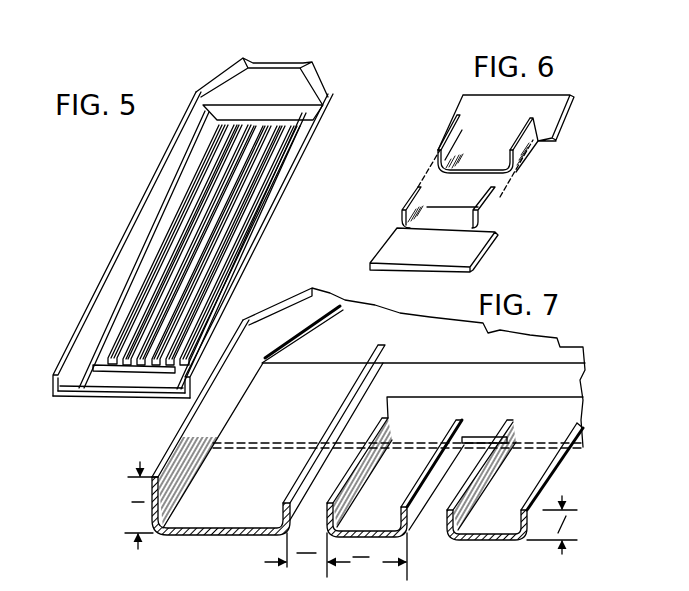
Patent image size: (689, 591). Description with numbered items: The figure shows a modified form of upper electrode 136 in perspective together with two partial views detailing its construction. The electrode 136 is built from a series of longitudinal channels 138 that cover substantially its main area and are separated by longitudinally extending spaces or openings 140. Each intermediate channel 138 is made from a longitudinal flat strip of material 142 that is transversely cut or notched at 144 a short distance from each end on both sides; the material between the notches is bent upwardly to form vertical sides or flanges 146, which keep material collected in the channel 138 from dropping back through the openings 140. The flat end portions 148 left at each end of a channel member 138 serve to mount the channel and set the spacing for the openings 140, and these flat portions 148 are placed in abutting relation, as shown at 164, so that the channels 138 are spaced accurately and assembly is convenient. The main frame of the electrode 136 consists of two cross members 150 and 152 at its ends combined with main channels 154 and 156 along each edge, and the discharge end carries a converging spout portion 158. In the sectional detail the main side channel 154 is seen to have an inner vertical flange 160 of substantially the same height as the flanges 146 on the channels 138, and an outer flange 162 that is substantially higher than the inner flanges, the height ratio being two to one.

In FIG. 5, the upper electrode 136 is at (210, 240).
In FIG. 7, the upper electrode 136 is at (362, 434).
In FIG. 5, the longitudinal channel 138 is at (165, 258).
In FIG. 6, the longitudinal channel 138 is at (488, 183).
In FIG. 7, the longitudinal channel 138 is at (408, 492).
In FIG. 5, the longitudinally extending space or opening 140 is at (137, 280).
In FIG. 6, the longitudinal flat strip of material 142 is at (453, 222).
In FIG. 7, the longitudinal flat strip of material 142 is at (523, 480).
In FIG. 6, the transverse cut or notch 144 is at (493, 222).
In FIG. 6, the vertical side or flange 146 is at (493, 188).
In FIG. 7, the vertical side or flange 146 is at (335, 510).
In FIG. 6, the flat end portion 148 is at (550, 118).
In FIG. 7, the flat end portion 148 is at (483, 407).
In FIG. 5, the cross member 150 is at (128, 383).
In FIG. 5, the cross member 152 is at (288, 112).
In FIG. 7, the cross member 152 is at (452, 385).
In FIG. 5, the main channel 154 is at (192, 147).
In FIG. 7, the main channel 154 is at (213, 477).
In FIG. 5, the main channel 156 is at (258, 224).
In FIG. 5, the converging spout portion 158 is at (307, 67).
In FIG. 7, the converging spout portion 158 is at (567, 357).
In FIG. 7, the inner vertical flange 160 is at (282, 518).
In FIG. 7, the outer flange 162 is at (140, 473).
In FIG. 7, the abutting relation of flat portions 164 is at (500, 408).